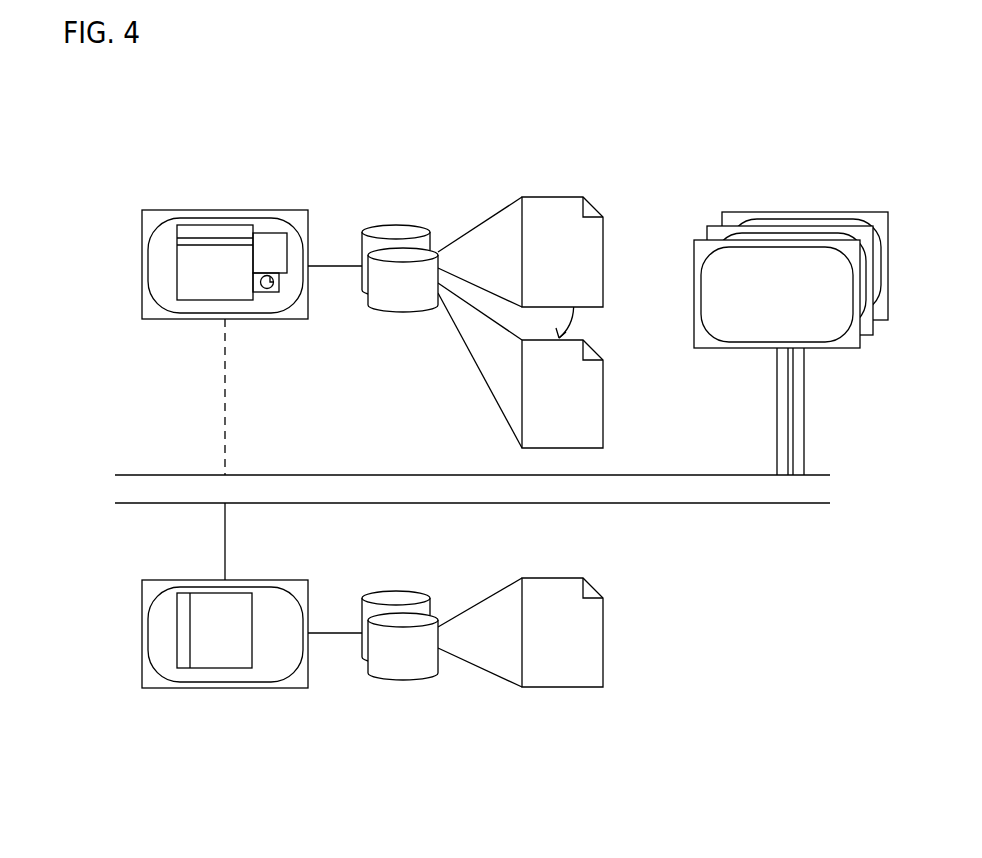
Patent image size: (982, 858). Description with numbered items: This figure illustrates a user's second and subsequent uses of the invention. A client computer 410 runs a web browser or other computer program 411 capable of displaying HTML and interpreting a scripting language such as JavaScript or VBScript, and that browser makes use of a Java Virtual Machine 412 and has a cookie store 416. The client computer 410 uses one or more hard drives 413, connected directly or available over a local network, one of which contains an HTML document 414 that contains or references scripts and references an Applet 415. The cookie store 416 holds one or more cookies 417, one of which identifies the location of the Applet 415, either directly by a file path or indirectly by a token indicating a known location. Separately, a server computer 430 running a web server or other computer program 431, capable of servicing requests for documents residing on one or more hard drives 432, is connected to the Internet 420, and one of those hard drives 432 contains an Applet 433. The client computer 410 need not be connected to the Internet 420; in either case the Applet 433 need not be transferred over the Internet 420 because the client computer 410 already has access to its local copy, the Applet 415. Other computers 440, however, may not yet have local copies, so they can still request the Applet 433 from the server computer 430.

The client computer 410 is at (142, 268).
The web browser or other computer program 411 is at (197, 226).
The Java Virtual Machine 412 is at (273, 233).
The hard drives 413 is at (395, 225).
The HTML document 414 is at (603, 255).
The Applet 415 is at (603, 398).
The cookie store 416 is at (267, 297).
The cookies 417 is at (278, 290).
The Internet 420 is at (115, 488).
The server computer 430 is at (142, 635).
The web server or other computer program 431 is at (218, 668).
The hard drives 432 is at (395, 591).
The Applet 433 is at (603, 635).
The other computers 440 is at (797, 212).